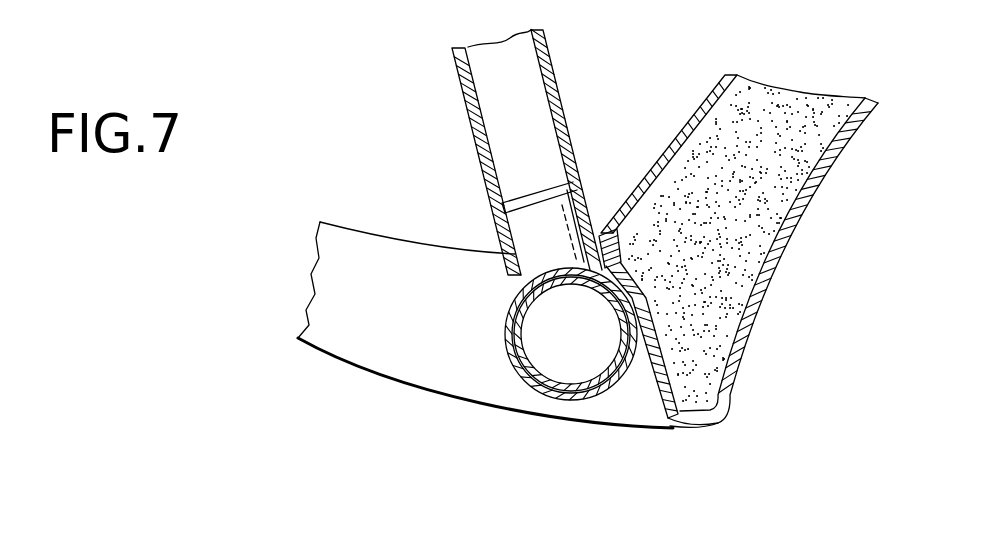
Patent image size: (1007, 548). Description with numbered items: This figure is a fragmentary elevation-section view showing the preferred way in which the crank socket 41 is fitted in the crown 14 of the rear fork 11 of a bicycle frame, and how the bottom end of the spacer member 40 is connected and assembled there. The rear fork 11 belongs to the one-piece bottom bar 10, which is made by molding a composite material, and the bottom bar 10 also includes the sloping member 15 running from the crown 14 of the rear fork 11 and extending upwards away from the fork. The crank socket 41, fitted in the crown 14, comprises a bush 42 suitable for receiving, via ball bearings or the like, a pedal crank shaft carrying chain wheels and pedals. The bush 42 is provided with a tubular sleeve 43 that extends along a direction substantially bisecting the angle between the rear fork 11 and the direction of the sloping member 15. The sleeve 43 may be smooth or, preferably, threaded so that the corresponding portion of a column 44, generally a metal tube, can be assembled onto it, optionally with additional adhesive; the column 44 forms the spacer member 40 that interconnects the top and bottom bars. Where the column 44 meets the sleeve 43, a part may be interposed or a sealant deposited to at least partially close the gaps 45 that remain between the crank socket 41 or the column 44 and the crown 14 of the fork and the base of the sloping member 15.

The bottom bar 10 is at (778, 268).
The rear fork 11 is at (363, 348).
The crown of the rear fork 14 is at (632, 410).
The sloping member 15 is at (792, 167).
The spacer member 40 is at (552, 68).
The crank socket 41 is at (553, 347).
The bush 42 is at (510, 312).
The tubular sleeve 43 is at (530, 232).
The column 44 is at (473, 115).
The gaps 45 is at (617, 242).